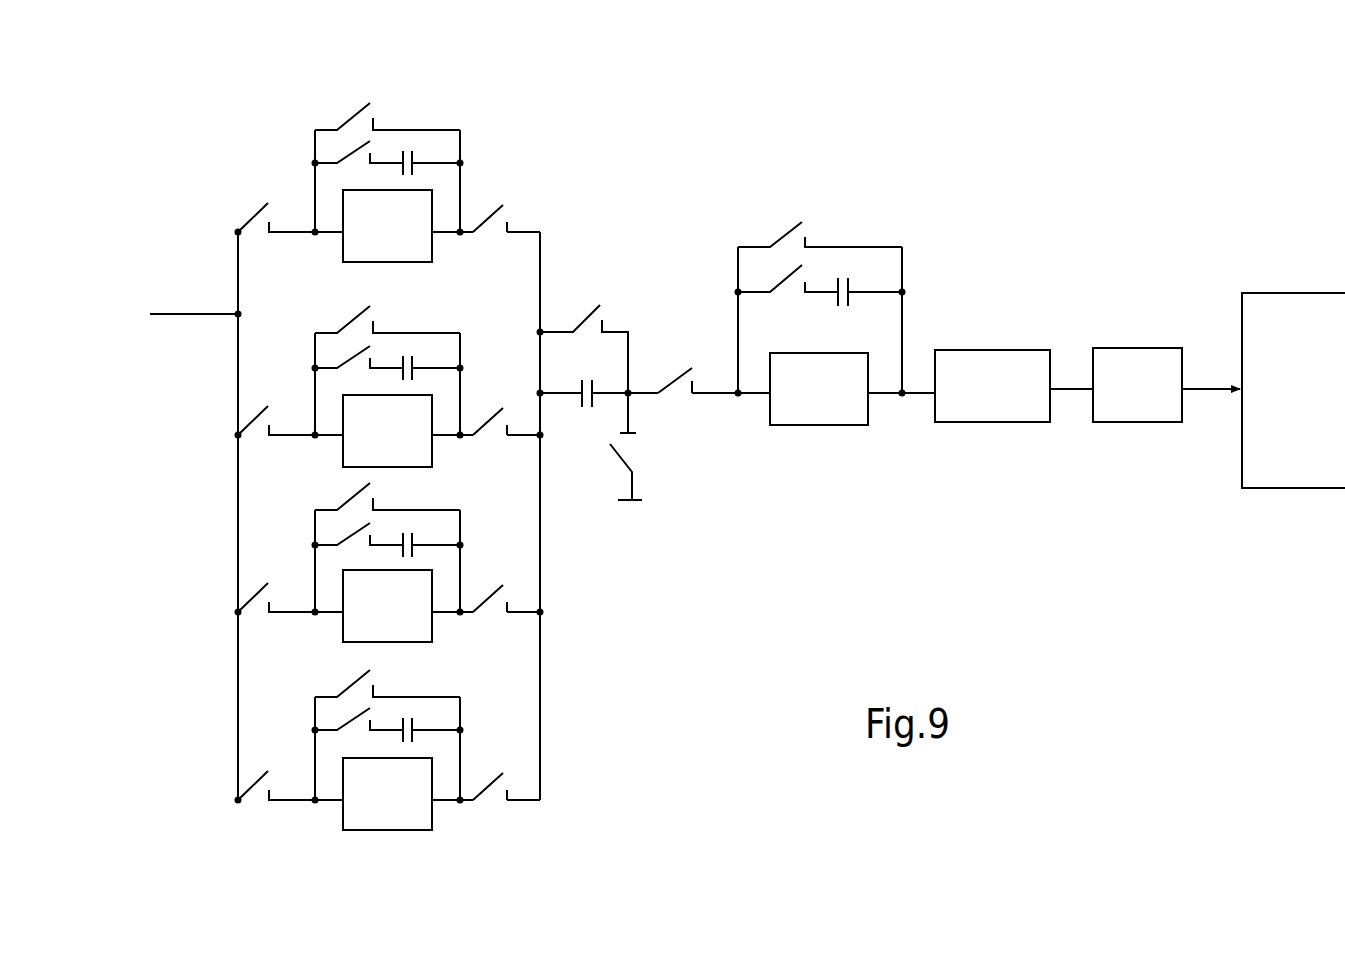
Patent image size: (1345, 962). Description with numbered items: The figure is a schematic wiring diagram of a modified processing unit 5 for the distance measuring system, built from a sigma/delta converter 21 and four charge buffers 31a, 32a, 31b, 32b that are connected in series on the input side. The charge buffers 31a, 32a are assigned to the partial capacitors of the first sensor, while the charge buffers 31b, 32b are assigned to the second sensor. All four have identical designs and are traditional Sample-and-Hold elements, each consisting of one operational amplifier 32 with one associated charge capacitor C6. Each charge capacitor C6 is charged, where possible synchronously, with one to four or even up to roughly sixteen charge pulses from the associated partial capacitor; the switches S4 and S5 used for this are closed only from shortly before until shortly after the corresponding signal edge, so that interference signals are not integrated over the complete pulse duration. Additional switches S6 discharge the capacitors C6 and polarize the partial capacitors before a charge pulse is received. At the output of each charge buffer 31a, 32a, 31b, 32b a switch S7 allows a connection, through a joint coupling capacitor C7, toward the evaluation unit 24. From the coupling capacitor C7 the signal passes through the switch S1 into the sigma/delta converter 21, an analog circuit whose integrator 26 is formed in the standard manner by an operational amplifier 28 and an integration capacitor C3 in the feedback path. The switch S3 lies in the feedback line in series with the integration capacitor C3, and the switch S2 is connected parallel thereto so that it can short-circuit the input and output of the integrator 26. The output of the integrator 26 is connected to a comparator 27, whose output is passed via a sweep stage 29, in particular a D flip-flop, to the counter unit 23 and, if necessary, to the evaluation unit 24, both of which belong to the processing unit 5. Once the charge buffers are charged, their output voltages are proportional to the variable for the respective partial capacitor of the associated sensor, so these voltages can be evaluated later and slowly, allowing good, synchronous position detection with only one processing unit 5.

The switch S4 is at (262, 212).
The switch S5 is at (347, 160).
The additional switch S6 is at (362, 108).
The switch S7 is at (512, 222).
The charge capacitor C6 is at (413, 148).
The operational amplifier 32 is at (417, 242).
The charge buffer 31a is at (278, 120).
The charge buffer 31b is at (283, 290).
The charge buffer 32a is at (280, 512).
The charge buffer 32b is at (277, 700).
The joint coupling capacitor C7 is at (598, 368).
The switch S1 is at (688, 365).
The switch S2 is at (795, 220).
The switch S3 is at (783, 277).
The integration capacitor C3 is at (855, 280).
The sigma/delta converter unit 21 is at (728, 458).
The integrator 26 is at (787, 440).
The operational amplifier 28 is at (852, 405).
The comparator 27 is at (1017, 405).
The sweep stage 29 is at (1157, 405).
The processing unit 5 is at (1293, 390).
The counter unit 23 is at (1293, 390).
The evaluation unit 24 is at (1333, 421).